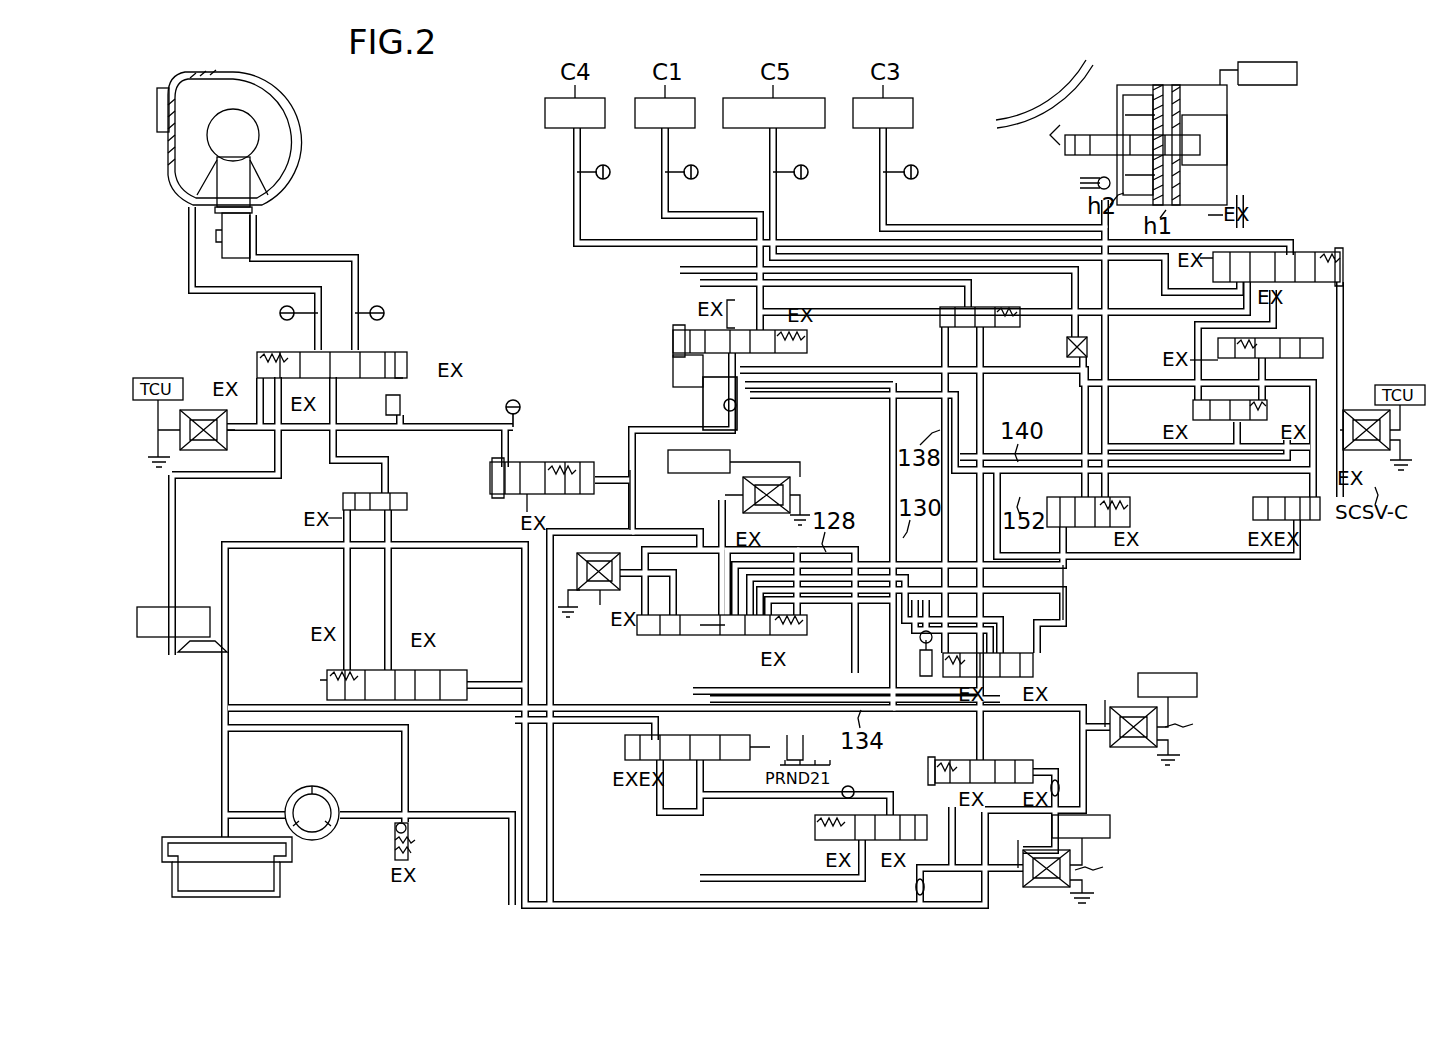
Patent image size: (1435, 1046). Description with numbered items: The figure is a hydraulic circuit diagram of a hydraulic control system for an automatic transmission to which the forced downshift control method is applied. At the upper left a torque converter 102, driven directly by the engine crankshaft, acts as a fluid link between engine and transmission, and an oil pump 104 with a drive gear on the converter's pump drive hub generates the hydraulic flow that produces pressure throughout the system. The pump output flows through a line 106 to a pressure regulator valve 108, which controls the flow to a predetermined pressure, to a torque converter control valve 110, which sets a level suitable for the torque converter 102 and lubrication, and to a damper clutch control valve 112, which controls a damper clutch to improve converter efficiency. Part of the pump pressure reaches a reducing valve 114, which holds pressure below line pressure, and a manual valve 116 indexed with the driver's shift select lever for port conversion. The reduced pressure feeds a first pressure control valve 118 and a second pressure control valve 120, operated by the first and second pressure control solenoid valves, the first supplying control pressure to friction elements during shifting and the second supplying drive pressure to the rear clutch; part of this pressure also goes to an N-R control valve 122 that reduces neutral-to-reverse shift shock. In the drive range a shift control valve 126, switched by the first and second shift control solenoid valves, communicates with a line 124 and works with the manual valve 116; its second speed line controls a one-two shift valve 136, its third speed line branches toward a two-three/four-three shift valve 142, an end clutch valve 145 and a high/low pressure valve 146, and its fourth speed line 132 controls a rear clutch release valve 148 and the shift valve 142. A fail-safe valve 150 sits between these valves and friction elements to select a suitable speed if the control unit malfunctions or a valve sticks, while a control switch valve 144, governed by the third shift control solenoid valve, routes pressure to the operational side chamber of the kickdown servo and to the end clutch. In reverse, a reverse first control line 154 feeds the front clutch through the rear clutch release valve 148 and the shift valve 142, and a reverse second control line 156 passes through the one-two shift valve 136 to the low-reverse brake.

The torque converter 102 is at (300, 152).
The oil pump 104 is at (318, 843).
The line 106 is at (452, 823).
The pressure regulator valve 108 is at (318, 684).
The torque converter control valve 110 is at (410, 500).
The damper clutch control valve 112 is at (410, 348).
The reducing valve 114 is at (560, 455).
The manual valve 116 is at (618, 748).
The first pressure control valve 118 is at (925, 785).
The second pressure control valve 120 is at (1035, 660).
The N-R control valve 122 is at (814, 824).
The line 124 is at (717, 660).
The shift control valve 126 is at (640, 650).
The fourth speed line 132 is at (794, 506).
The 1-2 shift valve 136 is at (1133, 512).
The 2-3/4-3 shift valve 142 is at (938, 314).
The control switch valve 144 is at (1328, 348).
The end clutch valve 145 is at (1188, 410).
The high/low pressure valve 146 is at (1310, 530).
The rear clutch release valve 148 is at (650, 343).
The fail-safe valve 150 is at (1345, 267).
The reverse first control line 154 is at (632, 496).
The reverse second control line 156 is at (1057, 590).